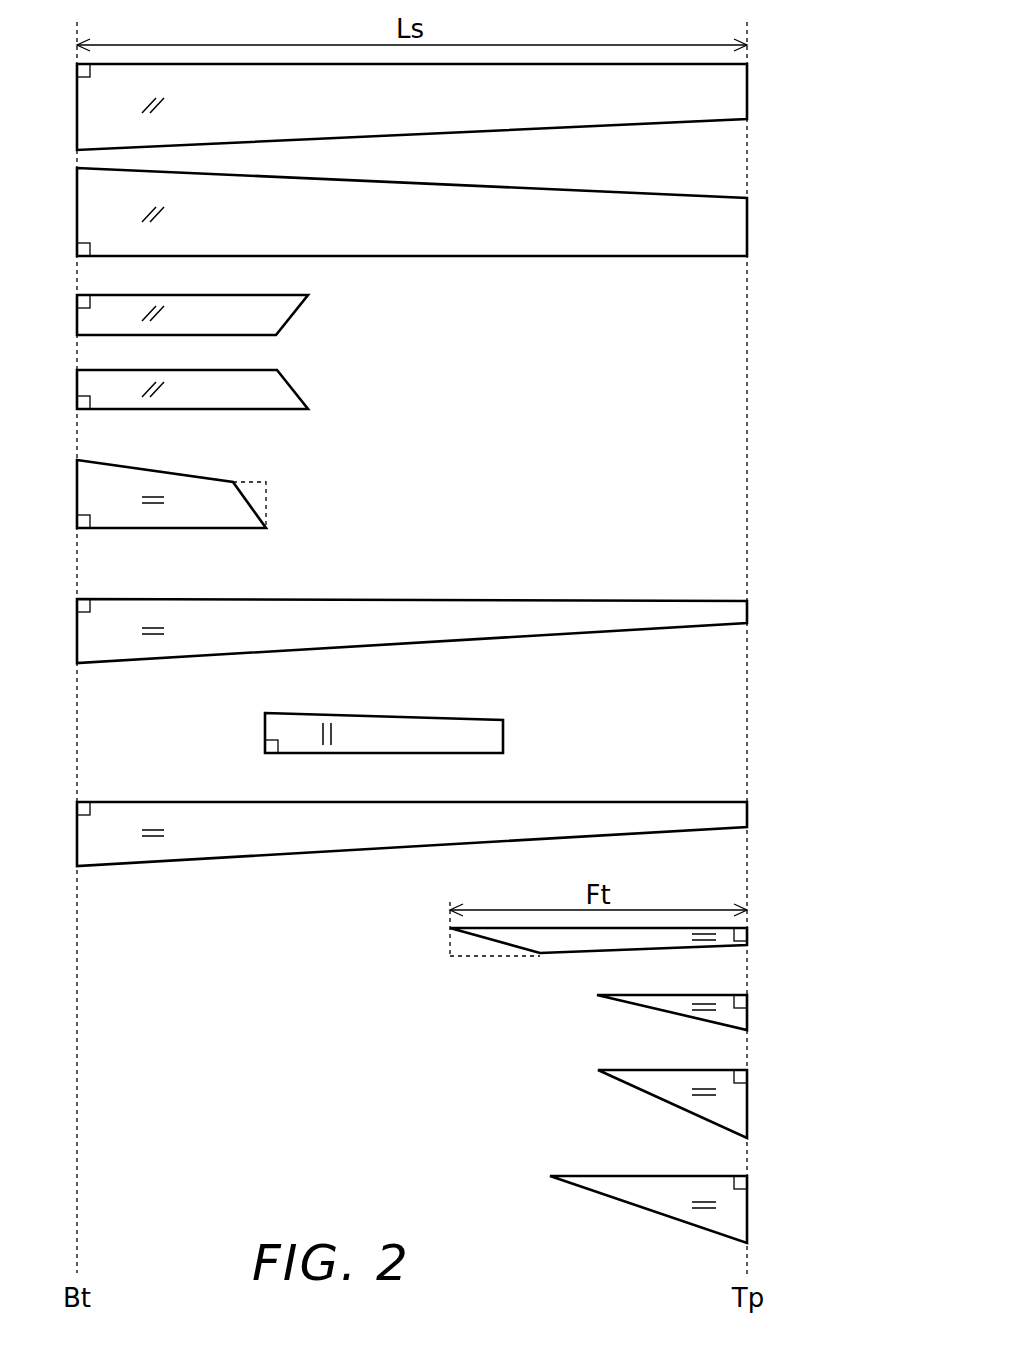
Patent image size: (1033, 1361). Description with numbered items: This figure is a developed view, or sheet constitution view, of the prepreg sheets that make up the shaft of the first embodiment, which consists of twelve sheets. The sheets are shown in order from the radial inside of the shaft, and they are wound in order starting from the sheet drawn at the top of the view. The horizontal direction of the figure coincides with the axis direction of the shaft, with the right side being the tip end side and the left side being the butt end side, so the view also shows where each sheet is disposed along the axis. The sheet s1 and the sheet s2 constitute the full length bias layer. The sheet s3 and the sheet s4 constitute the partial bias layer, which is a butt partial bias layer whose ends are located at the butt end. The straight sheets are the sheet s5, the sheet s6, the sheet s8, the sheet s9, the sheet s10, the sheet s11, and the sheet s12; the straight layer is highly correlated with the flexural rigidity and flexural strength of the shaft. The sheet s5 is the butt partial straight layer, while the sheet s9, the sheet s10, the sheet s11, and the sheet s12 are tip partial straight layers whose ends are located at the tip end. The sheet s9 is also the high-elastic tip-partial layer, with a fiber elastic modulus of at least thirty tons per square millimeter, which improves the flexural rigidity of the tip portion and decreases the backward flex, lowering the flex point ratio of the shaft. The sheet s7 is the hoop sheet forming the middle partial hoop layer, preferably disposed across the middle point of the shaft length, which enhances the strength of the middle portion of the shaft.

The sheet s1 is at (742, 93).
The sheet s2 is at (742, 228).
The sheet s3 is at (275, 316).
The sheet s4 is at (275, 390).
The sheet s5 is at (240, 507).
The sheet s6 is at (742, 612).
The sheet s7 is at (493, 737).
The sheet s8 is at (742, 813).
The sheet s9 is at (742, 935).
The sheet s10 is at (742, 1015).
The sheet s11 is at (742, 1110).
The sheet s12 is at (742, 1218).